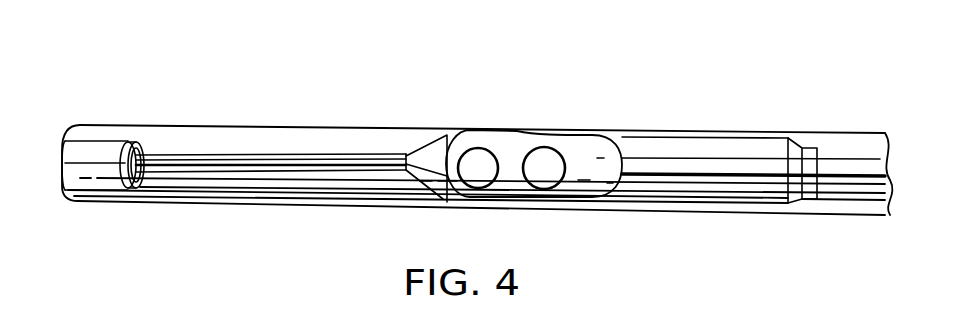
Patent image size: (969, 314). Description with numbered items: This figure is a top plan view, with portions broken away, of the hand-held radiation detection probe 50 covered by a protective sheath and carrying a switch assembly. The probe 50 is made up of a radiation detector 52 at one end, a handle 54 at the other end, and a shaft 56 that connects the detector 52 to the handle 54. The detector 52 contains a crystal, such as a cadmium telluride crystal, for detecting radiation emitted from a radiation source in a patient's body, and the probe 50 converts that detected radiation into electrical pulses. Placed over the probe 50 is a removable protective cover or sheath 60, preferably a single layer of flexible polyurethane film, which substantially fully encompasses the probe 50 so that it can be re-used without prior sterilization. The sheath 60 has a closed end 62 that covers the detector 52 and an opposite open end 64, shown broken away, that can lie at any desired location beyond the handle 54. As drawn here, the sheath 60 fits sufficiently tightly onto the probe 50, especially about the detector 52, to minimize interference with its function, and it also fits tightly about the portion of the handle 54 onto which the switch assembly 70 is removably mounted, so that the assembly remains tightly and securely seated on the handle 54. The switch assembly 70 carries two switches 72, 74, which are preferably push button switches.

The probe 50 is at (283, 110).
The radiation detector 52 is at (93, 190).
The handle 54 is at (690, 202).
The shaft 56 is at (253, 172).
The protective cover 60 is at (477, 128).
The closed end 62 is at (78, 127).
The open end 64 is at (890, 133).
The switch assembly 70 is at (503, 138).
The switch 72 is at (478, 179).
The switch 74 is at (543, 178).